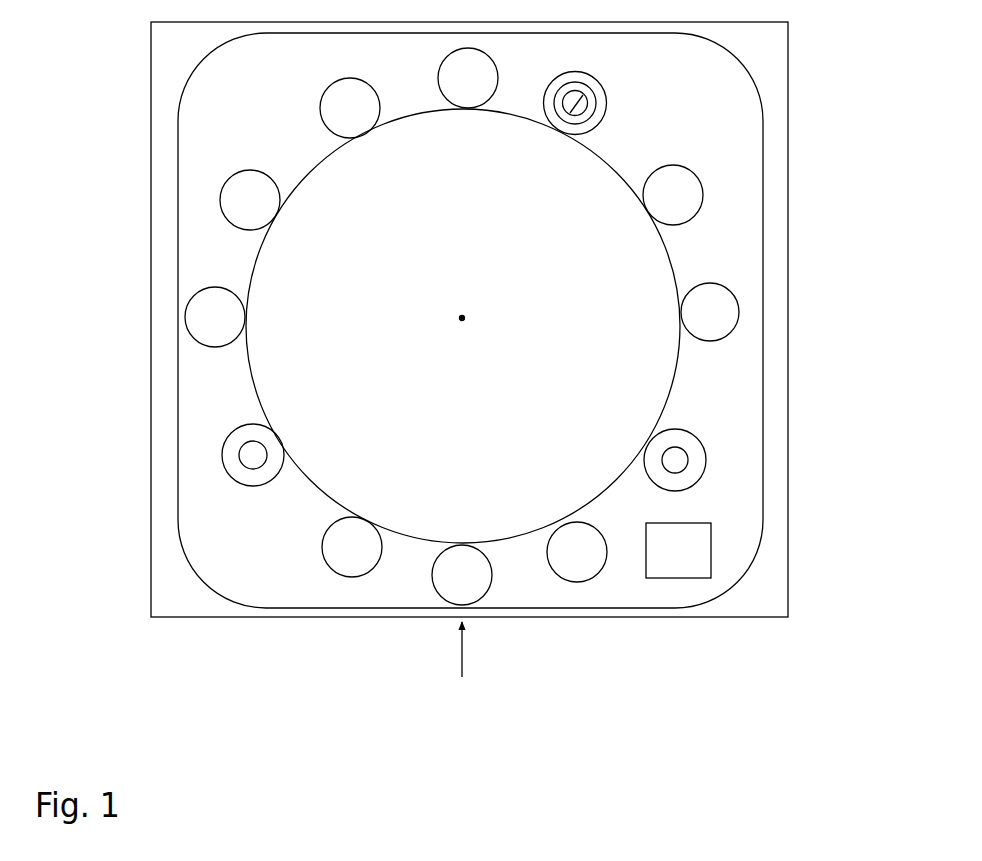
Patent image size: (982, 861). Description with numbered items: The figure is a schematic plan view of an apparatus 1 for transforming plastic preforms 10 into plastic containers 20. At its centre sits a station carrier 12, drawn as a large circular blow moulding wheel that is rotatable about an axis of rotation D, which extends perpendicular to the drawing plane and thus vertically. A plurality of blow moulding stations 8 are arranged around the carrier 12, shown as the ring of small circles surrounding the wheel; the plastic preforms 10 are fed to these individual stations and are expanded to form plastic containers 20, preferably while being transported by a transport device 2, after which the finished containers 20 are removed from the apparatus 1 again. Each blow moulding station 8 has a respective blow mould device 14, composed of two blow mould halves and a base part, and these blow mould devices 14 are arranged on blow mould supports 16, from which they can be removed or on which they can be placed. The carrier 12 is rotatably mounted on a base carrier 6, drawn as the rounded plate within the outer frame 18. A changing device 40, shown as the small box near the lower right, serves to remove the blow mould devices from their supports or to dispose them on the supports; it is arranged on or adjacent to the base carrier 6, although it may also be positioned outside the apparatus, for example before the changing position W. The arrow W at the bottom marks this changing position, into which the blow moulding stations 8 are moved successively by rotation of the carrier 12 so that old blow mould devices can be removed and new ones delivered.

The apparatus 1 is at (131, 246).
The transport device 2 is at (208, 240).
The base carrier 6 is at (247, 523).
The blow moulding station 8 is at (678, 183).
The plastic preform 10 is at (683, 463).
The station carrier 12 is at (650, 322).
The blow mould device 14 is at (587, 108).
The blow mould support 16 is at (603, 87).
The outer frame 18 is at (148, 502).
The plastic container 20 is at (252, 457).
The changing device 40 is at (678, 550).
The axis of rotation D is at (478, 320).
The changing position W is at (477, 649).